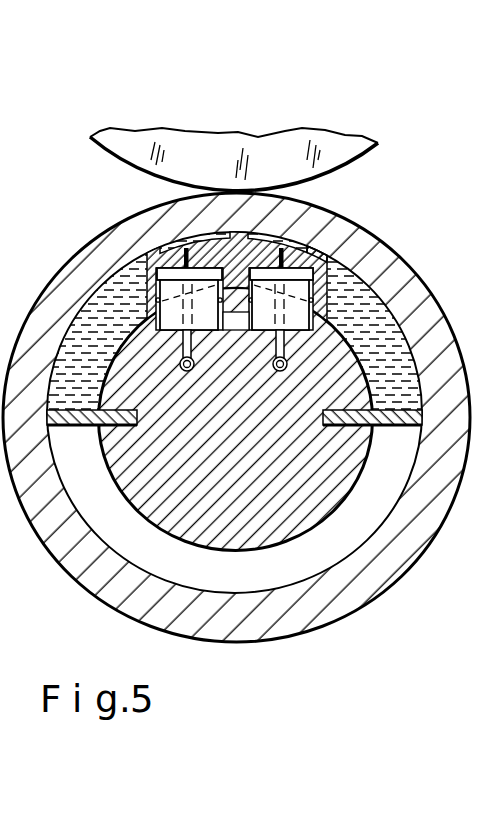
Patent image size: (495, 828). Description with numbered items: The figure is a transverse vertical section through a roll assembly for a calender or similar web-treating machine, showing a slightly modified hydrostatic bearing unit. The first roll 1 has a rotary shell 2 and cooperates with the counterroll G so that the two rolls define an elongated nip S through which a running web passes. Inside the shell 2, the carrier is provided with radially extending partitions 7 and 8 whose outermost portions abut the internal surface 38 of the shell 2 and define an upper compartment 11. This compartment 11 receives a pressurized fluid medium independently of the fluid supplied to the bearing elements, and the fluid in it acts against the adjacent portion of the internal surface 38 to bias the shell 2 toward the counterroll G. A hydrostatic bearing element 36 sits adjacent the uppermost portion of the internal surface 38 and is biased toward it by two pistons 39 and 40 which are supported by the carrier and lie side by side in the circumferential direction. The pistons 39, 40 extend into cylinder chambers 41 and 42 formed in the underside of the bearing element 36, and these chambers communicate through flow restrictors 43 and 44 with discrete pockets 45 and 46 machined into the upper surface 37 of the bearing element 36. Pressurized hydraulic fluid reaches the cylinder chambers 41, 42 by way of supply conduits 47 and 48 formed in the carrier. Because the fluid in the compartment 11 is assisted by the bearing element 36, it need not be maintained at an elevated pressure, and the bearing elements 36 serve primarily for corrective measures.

The first roll 1 is at (186, 359).
The shell 2 is at (213, 627).
The partition 7 is at (70, 418).
The partition 8 is at (393, 418).
The upper compartment 11 is at (403, 337).
The hydrostatic bearing element 36 is at (324, 258).
The upper surface 37 is at (157, 253).
The internal surface 38 is at (104, 297).
The piston 39 is at (150, 311).
The piston 40 is at (372, 320).
The cylinder chamber 41 is at (187, 248).
The cylinder chamber 42 is at (256, 284).
The flow restrictor 43 is at (190, 250).
The flow restrictor 44 is at (281, 250).
The pocket 45 is at (186, 268).
The pocket 46 is at (303, 253).
The supply conduit 47 is at (185, 372).
The supply conduit 48 is at (280, 372).
The counterroll G is at (128, 140).
The nip S is at (326, 191).